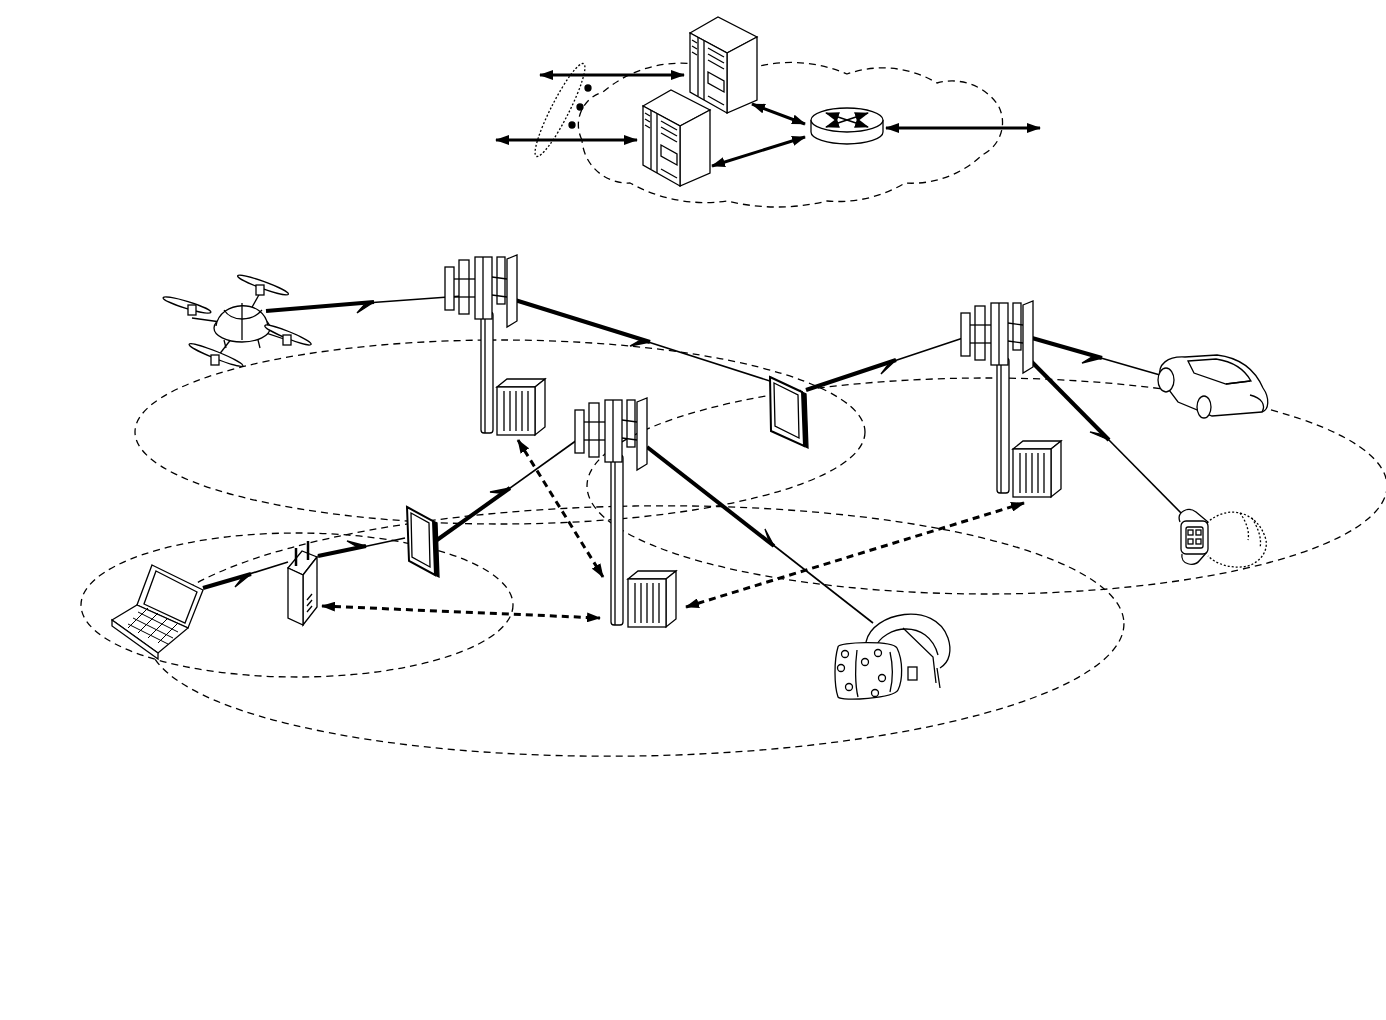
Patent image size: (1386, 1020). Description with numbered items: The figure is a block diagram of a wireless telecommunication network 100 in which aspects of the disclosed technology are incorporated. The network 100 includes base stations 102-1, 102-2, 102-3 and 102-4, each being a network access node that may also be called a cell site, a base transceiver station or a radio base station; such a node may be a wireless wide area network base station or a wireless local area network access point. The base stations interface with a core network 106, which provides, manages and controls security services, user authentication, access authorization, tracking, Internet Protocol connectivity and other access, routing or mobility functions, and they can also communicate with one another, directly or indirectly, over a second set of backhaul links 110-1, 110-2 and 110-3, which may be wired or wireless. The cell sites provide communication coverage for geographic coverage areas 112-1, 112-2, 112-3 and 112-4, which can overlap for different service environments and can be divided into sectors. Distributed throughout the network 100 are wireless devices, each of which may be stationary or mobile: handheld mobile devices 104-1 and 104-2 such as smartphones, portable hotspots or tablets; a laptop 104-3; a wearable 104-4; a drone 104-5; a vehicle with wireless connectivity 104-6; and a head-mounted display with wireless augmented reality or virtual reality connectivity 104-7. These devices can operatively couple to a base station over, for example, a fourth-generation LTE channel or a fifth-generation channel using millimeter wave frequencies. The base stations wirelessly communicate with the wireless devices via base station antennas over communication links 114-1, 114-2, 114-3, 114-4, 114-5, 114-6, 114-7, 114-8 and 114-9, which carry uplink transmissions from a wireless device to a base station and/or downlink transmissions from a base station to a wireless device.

The wireless telecommunication network 100 is at (1287, 118).
The base station 102-1 is at (616, 628).
The base station 102-2 is at (479, 380).
The base station 102-3 is at (994, 413).
The base station 102-4 is at (287, 612).
The handheld mobile device 104-1 is at (437, 554).
The handheld mobile device 104-2 is at (770, 412).
The laptop 104-3 is at (135, 650).
The wearable 104-4 is at (1195, 518).
The drone 104-5 is at (252, 348).
The vehicle with wireless connectivity 104-6 is at (1240, 368).
The head-mounted display 104-7 is at (948, 650).
The core network 106 is at (878, 201).
The backhaul link 110-1 is at (356, 612).
The backhaul link 110-2 is at (921, 540).
The backhaul link 110-3 is at (572, 534).
The geographic coverage area 112-1 is at (545, 756).
The geographic coverage area 112-2 is at (424, 664).
The geographic coverage area 112-3 is at (197, 488).
The geographic coverage area 112-4 is at (1290, 418).
The communication link 114-1 is at (778, 546).
The communication link 114-2 is at (506, 480).
The communication link 114-3 is at (214, 588).
The communication link 114-4 is at (358, 556).
The communication link 114-5 is at (364, 302).
The communication link 114-6 is at (645, 334).
The communication link 114-7 is at (886, 356).
The communication link 114-8 is at (1120, 455).
The communication link 114-9 is at (1100, 355).